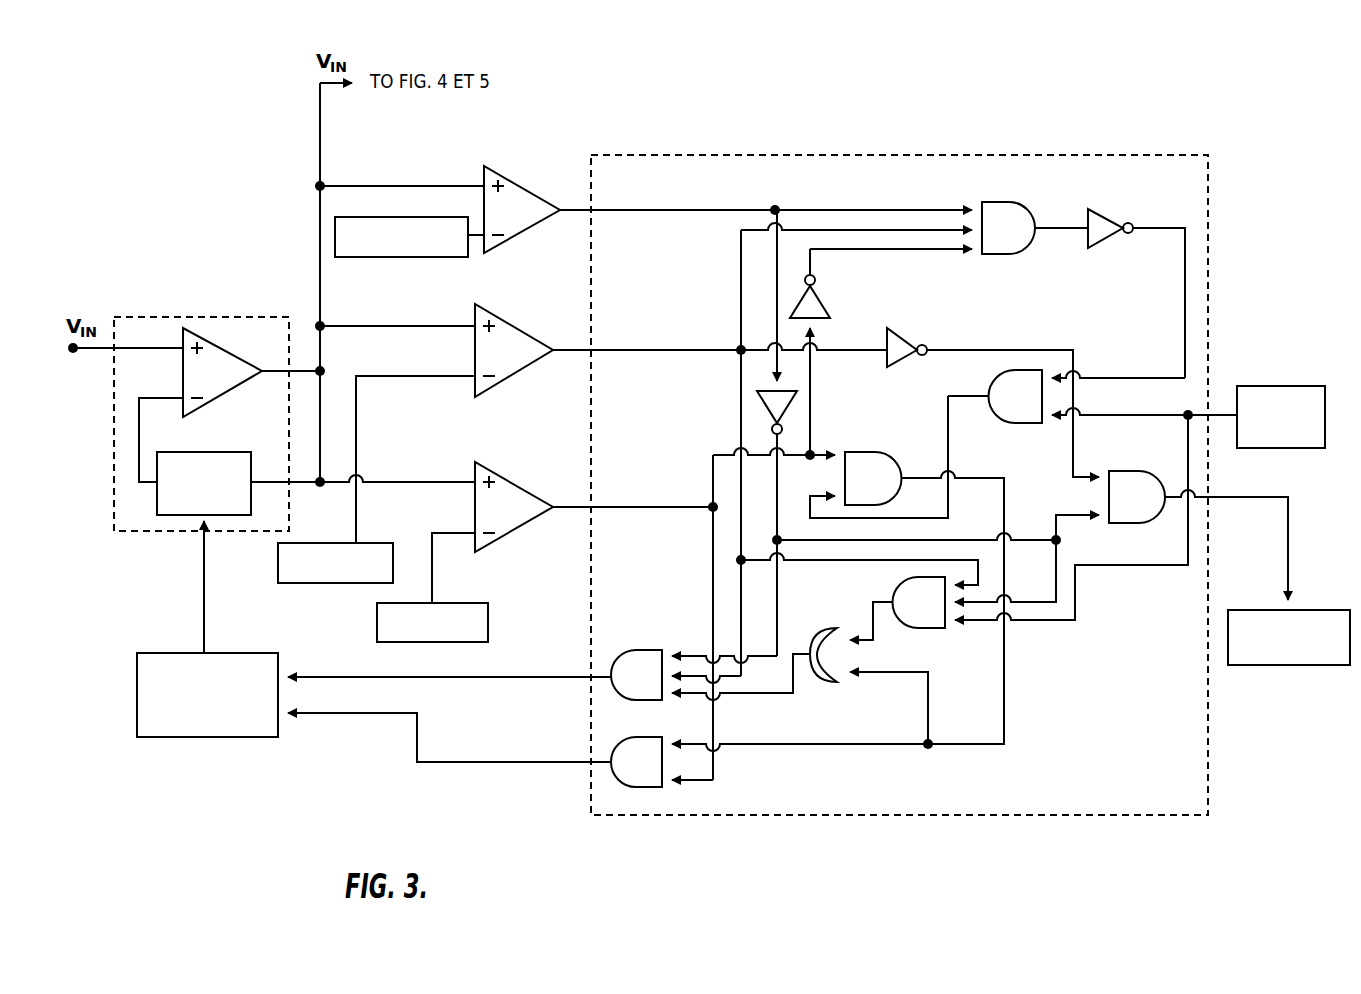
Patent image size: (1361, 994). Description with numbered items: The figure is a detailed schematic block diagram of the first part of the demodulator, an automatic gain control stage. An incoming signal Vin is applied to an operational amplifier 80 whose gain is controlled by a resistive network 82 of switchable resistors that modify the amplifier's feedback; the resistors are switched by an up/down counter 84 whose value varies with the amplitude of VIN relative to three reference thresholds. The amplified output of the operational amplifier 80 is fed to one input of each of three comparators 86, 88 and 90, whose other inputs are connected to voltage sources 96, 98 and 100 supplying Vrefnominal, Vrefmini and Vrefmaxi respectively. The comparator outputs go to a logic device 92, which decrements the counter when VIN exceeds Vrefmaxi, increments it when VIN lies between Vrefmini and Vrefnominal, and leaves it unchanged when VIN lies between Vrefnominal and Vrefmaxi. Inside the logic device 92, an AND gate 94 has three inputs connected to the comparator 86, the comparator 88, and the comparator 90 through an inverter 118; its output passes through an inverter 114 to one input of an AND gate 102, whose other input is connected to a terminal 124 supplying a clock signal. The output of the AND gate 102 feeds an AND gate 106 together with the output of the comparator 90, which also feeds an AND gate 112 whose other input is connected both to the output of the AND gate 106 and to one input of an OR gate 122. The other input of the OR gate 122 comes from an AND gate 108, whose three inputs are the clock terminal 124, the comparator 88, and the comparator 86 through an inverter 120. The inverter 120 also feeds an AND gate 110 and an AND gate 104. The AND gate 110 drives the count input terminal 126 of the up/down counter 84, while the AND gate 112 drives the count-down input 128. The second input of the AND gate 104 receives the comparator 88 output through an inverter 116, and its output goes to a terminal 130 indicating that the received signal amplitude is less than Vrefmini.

The operational amplifier 80 is at (228, 348).
The resistive network 82 is at (225, 452).
The up/down counter 84 is at (170, 653).
The comparator 86 is at (539, 192).
The comparator 88 is at (529, 334).
The comparator 90 is at (538, 492).
The logic device 92 is at (828, 815).
The AND gate 94 is at (1018, 254).
The voltage source 96 is at (365, 257).
The voltage source 98 is at (366, 543).
The voltage source 100 is at (488, 632).
The AND gate 102 is at (1008, 423).
The AND gate 104 is at (1123, 471).
The AND gate 106 is at (866, 452).
The AND gate 108 is at (920, 628).
The AND gate 110 is at (630, 650).
The AND gate 112 is at (608, 786).
The inverter 114 is at (1100, 245).
The inverter 116 is at (905, 333).
The inverter 118 is at (823, 306).
The inverter 120 is at (760, 402).
The OR gate 122 is at (826, 629).
The terminal 124 is at (1290, 386).
The count input terminal 126 is at (345, 677).
The count-down input 128 is at (341, 715).
The terminal 130 is at (1290, 665).